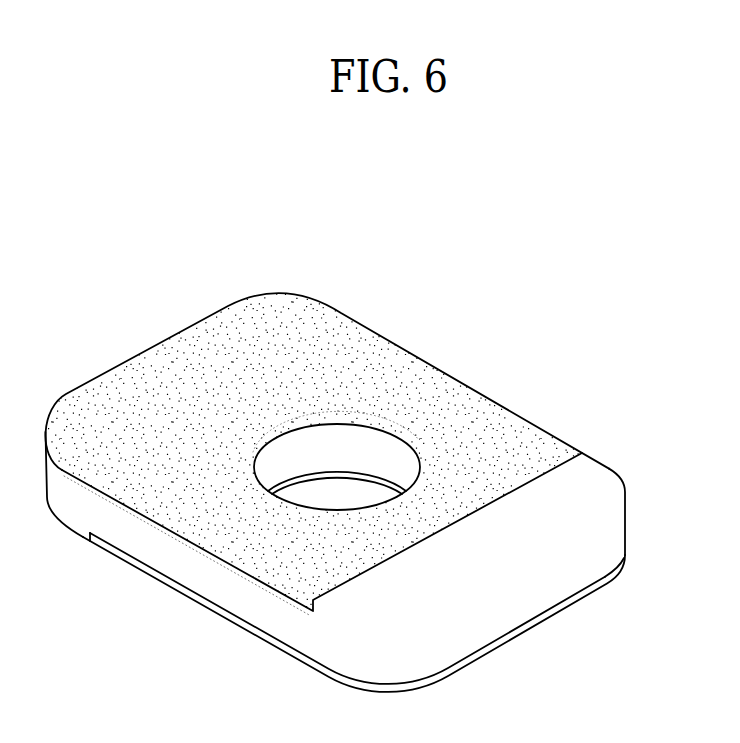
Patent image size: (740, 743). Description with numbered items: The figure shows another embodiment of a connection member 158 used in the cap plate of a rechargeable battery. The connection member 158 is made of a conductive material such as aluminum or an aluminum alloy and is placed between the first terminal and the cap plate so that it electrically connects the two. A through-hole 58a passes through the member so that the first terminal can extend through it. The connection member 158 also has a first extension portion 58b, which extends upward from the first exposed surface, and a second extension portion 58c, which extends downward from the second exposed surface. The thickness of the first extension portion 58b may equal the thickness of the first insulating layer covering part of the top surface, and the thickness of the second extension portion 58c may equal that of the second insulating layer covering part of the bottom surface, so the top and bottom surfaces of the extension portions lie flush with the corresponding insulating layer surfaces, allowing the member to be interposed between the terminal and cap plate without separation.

The through-hole 58a is at (343, 490).
The first extension portion 58b is at (583, 492).
The second extension portion 58c is at (76, 527).
The connection member 158 is at (614, 564).